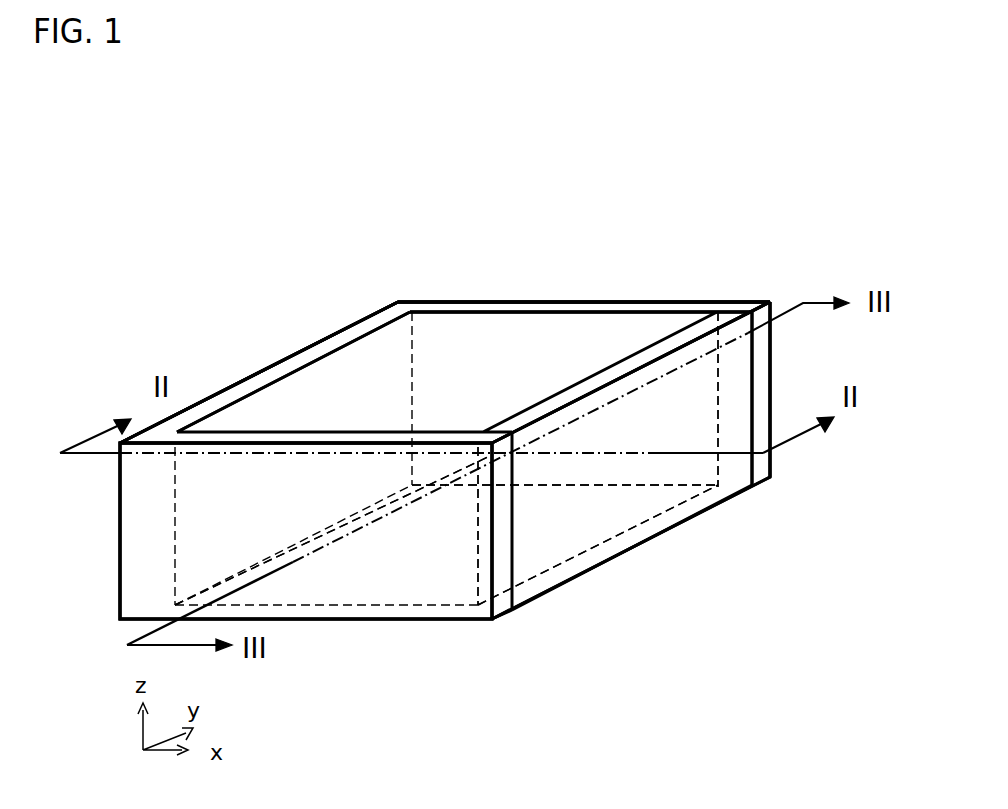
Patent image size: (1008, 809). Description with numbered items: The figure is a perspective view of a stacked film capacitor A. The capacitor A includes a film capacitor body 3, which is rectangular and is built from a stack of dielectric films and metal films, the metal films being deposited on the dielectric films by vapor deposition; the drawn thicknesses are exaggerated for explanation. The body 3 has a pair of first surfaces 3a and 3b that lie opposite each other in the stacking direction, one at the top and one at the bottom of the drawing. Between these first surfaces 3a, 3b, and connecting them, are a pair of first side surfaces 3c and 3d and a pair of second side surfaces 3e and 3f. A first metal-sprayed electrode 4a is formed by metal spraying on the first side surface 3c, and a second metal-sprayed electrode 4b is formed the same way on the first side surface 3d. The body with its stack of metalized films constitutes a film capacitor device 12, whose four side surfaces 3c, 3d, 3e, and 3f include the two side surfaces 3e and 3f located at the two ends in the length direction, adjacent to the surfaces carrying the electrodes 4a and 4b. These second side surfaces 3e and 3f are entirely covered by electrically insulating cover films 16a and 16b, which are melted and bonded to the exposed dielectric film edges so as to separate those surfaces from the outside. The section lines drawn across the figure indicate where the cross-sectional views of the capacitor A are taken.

The stacked film capacitor A is at (745, 207).
The film capacitor body 3 is at (358, 387).
The first surface 3a is at (425, 342).
The first surface 3b is at (428, 572).
The first side surface 3c is at (312, 398).
The first side surface 3d is at (626, 490).
The second side surface 3e is at (343, 563).
The second side surface 3f is at (578, 366).
The first metal-sprayed electrode 4a is at (230, 397).
The second metal-sprayed electrode 4b is at (730, 398).
The film capacitor device 12 is at (472, 292).
The cover film 16a is at (155, 568).
The cover film 16b is at (547, 300).